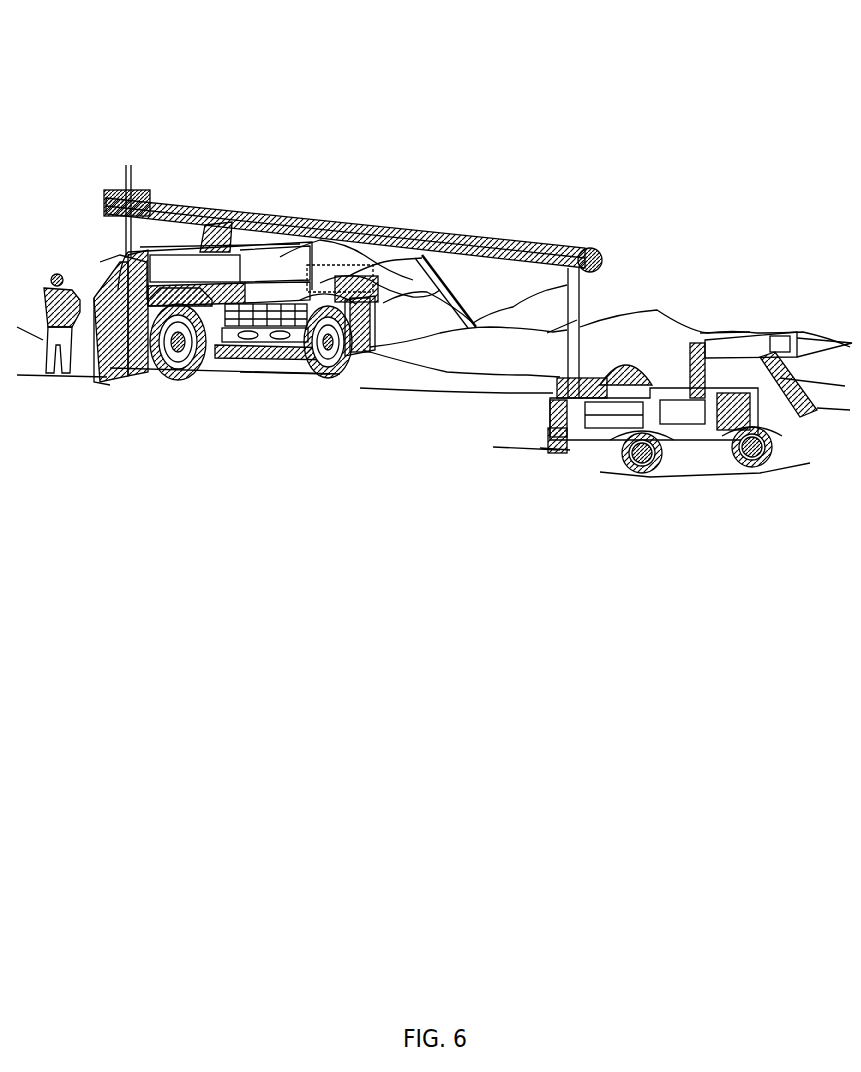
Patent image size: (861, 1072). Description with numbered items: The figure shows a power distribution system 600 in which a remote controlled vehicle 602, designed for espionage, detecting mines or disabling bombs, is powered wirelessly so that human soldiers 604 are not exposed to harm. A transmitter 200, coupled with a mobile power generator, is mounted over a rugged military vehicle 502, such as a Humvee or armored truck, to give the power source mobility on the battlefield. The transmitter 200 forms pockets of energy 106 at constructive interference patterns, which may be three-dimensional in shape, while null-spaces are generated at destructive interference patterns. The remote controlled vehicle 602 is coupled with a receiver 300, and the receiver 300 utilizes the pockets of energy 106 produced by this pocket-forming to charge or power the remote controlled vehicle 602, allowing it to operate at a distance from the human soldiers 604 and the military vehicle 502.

The power distribution system 600 is at (503, 98).
The transmitter 200 is at (148, 200).
The pockets of energy 106 is at (590, 250).
The receiver 300 is at (540, 288).
The military vehicle 502 is at (110, 265).
The human soldiers 604 is at (358, 372).
The remote controlled vehicle 602 is at (713, 333).